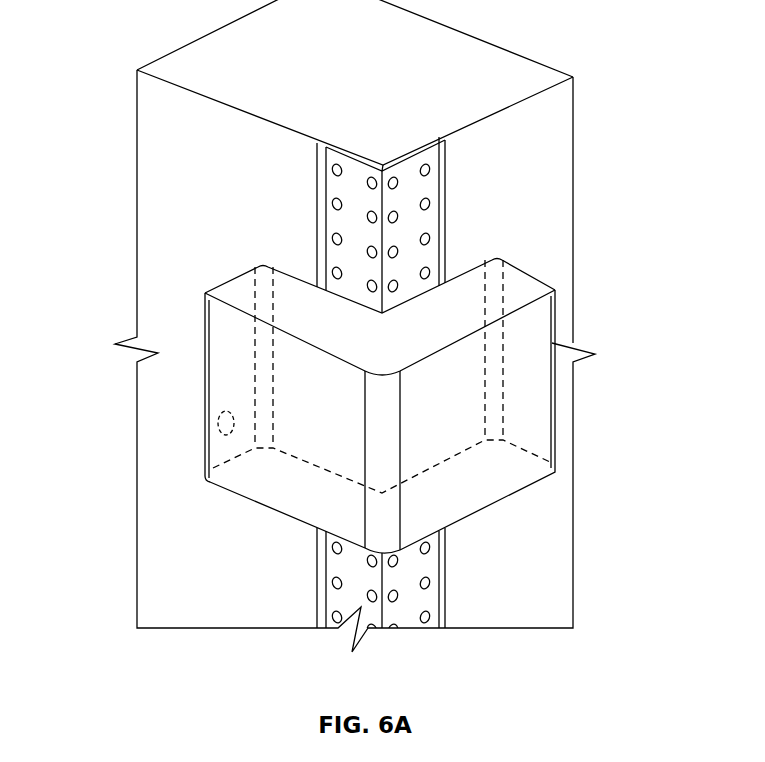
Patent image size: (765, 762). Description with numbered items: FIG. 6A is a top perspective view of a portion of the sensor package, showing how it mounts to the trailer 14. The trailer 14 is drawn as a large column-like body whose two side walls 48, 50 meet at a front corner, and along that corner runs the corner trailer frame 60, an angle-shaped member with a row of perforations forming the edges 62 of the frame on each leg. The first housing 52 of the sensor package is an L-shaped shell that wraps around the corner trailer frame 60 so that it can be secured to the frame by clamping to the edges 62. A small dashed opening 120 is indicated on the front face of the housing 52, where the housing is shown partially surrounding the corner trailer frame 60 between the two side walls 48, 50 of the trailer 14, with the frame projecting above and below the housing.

The trailer 14 is at (348, 326).
The column side wall 48 is at (553, 242).
The column side wall 50 is at (158, 223).
The first housing 52 is at (306, 413).
The corner trailer frame 60 is at (382, 415).
The edges 62 is at (318, 582).
The opening 120 is at (216, 425).